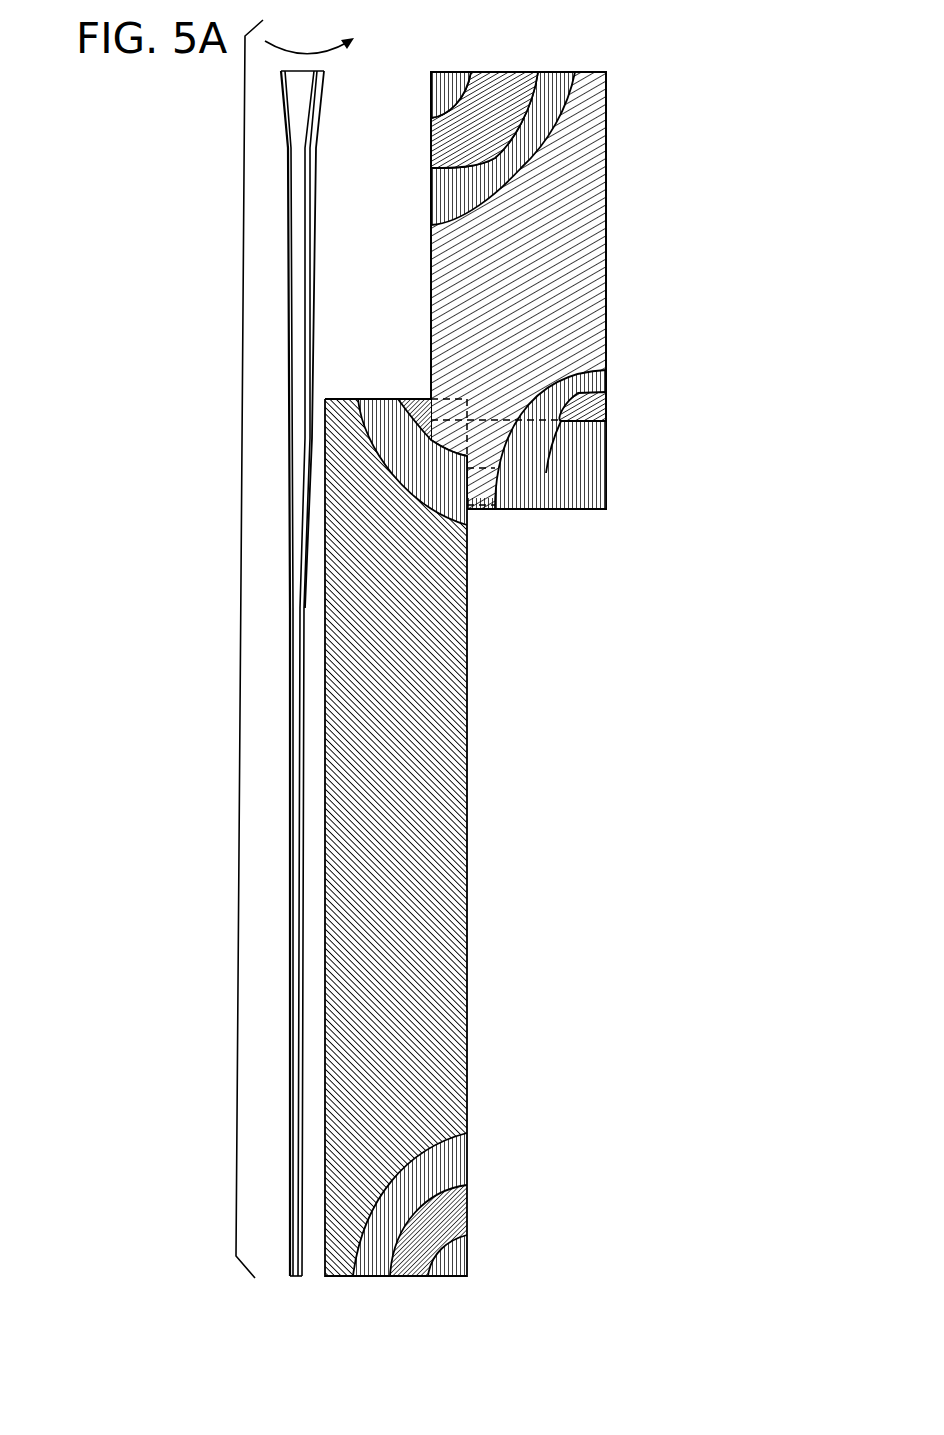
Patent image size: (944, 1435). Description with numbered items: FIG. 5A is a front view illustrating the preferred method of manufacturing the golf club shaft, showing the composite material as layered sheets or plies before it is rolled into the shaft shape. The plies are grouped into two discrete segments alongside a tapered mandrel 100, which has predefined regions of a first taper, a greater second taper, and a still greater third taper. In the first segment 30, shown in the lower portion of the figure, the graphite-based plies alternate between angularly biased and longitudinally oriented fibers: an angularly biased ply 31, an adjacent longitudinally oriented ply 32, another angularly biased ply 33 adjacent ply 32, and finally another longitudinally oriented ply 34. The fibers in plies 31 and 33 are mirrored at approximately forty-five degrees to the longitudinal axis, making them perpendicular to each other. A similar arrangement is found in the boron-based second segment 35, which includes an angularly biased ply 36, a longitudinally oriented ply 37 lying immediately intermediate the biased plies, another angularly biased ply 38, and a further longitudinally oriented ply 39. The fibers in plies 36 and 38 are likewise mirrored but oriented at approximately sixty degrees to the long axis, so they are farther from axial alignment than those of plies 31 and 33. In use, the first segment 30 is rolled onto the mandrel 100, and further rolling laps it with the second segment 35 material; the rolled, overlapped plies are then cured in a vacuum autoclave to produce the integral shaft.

The mandrel 100 is at (275, 663).
The first segment 30 is at (442, 801).
The angularly biased ply 31 is at (337, 398).
The longitudinally oriented ply 32 is at (370, 393).
The angularly biased ply 33 is at (408, 397).
The longitudinally oriented ply 34 is at (448, 1243).
The second segment 35 is at (471, 52).
The angularly biased ply 36 is at (588, 125).
The longitudinally oriented ply 37 is at (545, 78).
The angularly biased ply 38 is at (495, 97).
The longitudinally oriented ply 39 is at (432, 82).